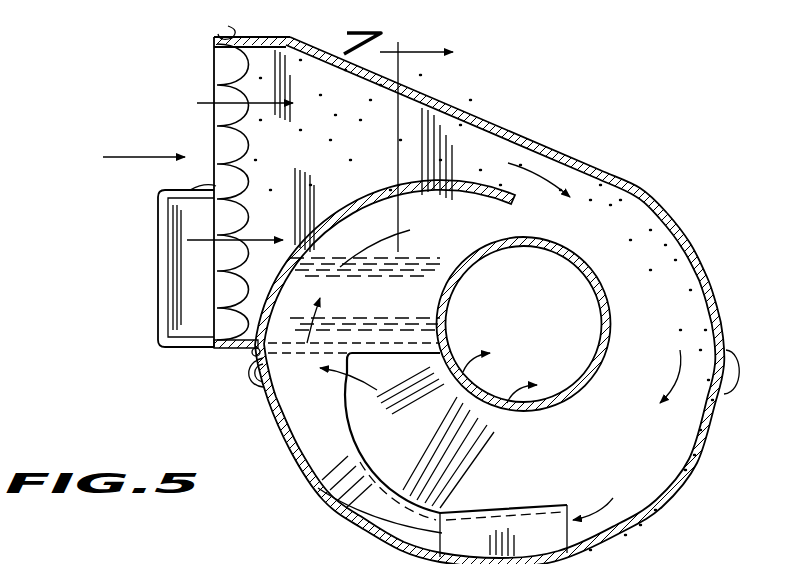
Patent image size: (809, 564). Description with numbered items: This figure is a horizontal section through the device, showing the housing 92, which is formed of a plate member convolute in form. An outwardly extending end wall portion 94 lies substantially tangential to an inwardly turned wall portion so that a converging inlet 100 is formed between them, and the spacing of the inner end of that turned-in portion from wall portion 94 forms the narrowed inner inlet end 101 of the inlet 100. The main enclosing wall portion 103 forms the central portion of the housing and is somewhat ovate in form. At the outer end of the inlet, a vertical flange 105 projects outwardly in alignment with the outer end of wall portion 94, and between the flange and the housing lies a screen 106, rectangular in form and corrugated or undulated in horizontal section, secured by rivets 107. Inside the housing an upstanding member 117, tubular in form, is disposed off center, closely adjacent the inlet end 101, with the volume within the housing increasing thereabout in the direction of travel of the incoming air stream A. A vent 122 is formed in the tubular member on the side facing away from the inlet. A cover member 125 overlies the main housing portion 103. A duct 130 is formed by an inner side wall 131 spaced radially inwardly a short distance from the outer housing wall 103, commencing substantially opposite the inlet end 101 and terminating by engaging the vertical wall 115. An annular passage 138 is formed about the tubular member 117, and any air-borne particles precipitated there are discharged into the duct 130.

The housing 92 is at (766, 563).
The outwardly extending end wall portion 94 is at (284, 37).
The converging inlet 100 is at (330, 97).
The narrowed inner inlet end 101 is at (487, 147).
The main enclosing wall portion 103 is at (681, 490).
The vertical flange 105 is at (186, 350).
The screen 106 is at (213, 125).
The rivets 107 is at (228, 26).
The vertical wall 115 is at (270, 388).
The upstanding member 117 is at (598, 369).
The vent 122 is at (462, 392).
The cover member 125 is at (300, 557).
The duct 130 is at (543, 527).
The inner side wall 131 is at (440, 513).
The annular passage 138 is at (420, 434).
The incoming air stream A is at (677, 312).